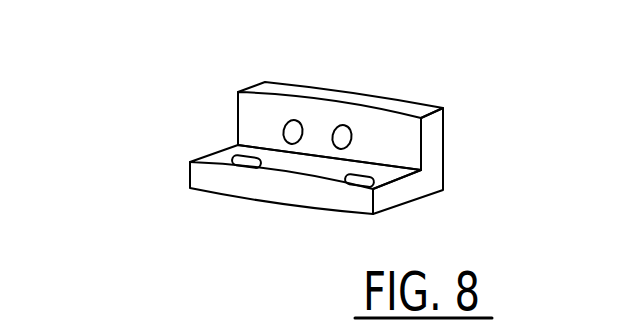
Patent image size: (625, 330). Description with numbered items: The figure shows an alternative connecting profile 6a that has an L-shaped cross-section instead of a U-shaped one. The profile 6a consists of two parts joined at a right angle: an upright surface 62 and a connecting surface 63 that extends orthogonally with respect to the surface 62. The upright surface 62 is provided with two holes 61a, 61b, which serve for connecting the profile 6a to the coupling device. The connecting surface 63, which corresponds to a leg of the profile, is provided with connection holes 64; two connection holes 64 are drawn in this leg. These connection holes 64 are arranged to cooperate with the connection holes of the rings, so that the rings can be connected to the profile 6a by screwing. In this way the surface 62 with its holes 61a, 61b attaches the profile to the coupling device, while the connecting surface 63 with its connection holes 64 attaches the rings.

The profile 6a is at (150, 212).
The hole 61a is at (290, 121).
The hole 61b is at (340, 125).
The surface 62 is at (402, 142).
The connecting surface 63 is at (397, 195).
The connection holes 64 is at (355, 180).